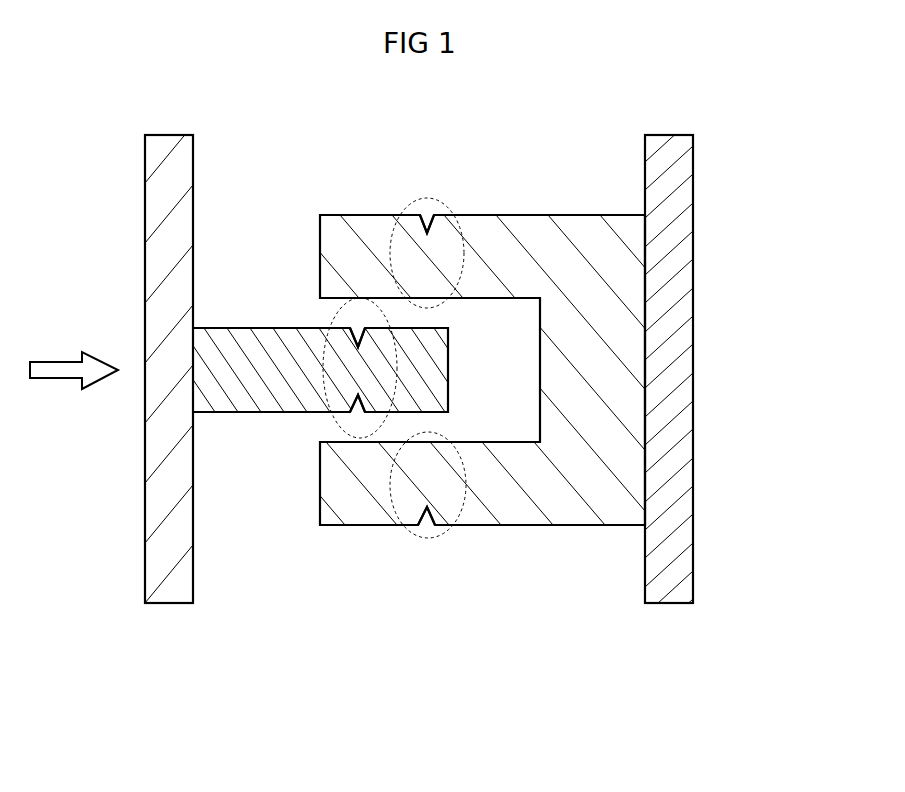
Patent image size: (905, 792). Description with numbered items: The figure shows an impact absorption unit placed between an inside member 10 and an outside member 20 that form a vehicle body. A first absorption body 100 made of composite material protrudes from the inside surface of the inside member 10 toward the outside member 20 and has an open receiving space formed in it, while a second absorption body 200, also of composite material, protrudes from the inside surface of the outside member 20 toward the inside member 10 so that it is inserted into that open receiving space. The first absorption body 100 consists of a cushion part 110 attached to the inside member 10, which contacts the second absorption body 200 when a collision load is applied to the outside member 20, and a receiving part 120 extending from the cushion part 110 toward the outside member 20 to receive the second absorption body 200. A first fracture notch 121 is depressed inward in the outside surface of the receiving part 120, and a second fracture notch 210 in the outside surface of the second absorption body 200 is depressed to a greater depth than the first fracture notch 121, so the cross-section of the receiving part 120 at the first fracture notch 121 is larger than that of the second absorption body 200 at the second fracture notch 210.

The inside member 10 is at (682, 282).
The outside member 20 is at (167, 183).
The first absorption body 100 is at (492, 417).
The cushion part 110 is at (612, 390).
The receiving part 120 is at (492, 253).
The first fracture notch 121 is at (428, 224).
The second absorption body 200 is at (276, 454).
The second fracture notch 210 is at (352, 332).